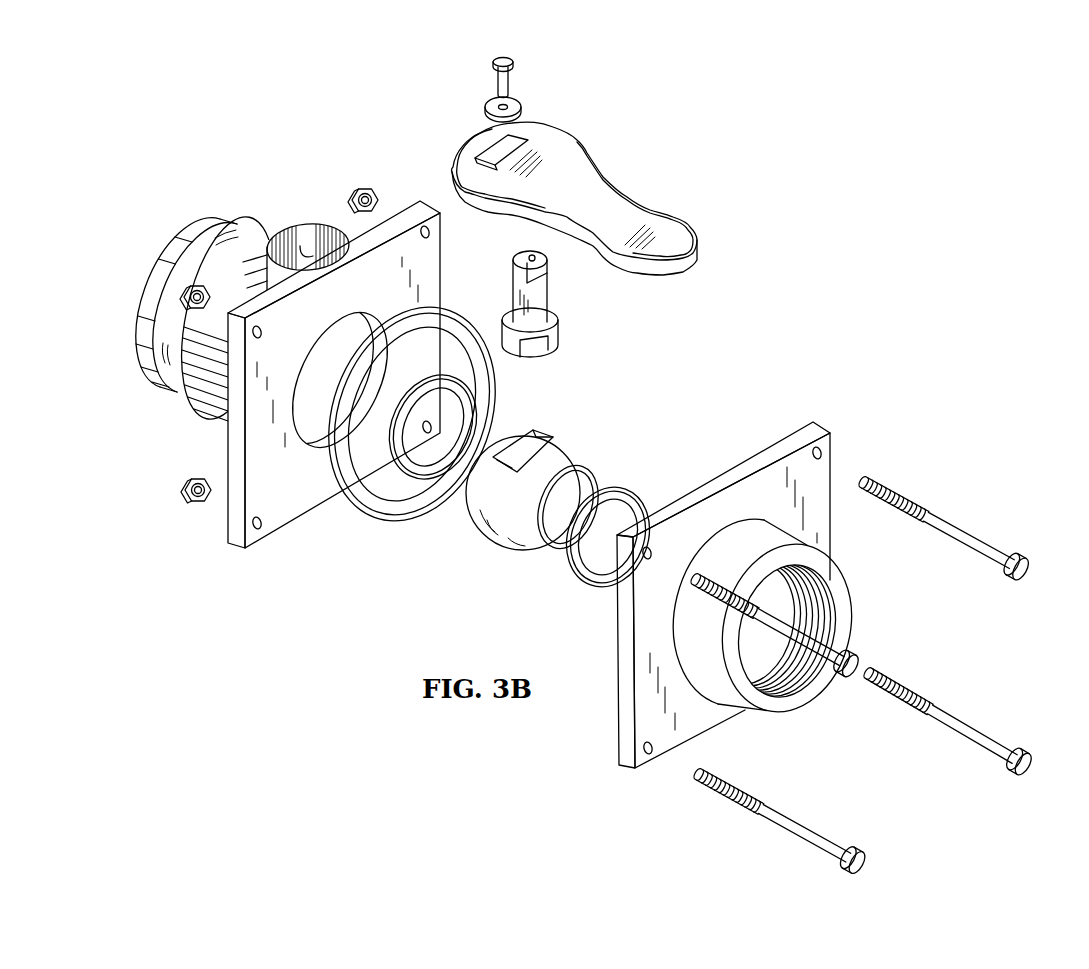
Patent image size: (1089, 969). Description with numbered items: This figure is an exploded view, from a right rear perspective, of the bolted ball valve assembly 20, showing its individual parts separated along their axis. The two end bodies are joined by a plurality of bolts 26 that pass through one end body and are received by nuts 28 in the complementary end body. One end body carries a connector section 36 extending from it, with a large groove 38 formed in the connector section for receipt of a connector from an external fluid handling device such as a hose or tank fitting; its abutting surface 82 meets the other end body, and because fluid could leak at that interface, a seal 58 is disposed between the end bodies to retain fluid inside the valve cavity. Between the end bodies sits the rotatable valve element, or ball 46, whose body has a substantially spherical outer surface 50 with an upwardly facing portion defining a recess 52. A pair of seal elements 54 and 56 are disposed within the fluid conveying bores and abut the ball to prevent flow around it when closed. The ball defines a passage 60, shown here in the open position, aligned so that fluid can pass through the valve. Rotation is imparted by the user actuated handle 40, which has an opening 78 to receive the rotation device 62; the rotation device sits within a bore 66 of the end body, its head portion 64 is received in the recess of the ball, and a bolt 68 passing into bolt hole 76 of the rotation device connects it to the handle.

The bolted ball valve assembly 20 is at (973, 157).
The bolts 26 is at (993, 547).
The nuts 28 is at (367, 185).
The connector section 36 is at (212, 214).
The large groove 38 is at (266, 244).
The user actuated handle 40 is at (670, 230).
The rotatable valve element (ball) 46 is at (510, 533).
The substantially spherical outer surface 50 is at (587, 470).
The recess 52 is at (537, 443).
The seal element 54 is at (633, 497).
The seal element 56 is at (472, 393).
The seal 58 is at (380, 527).
The passage 60 is at (550, 530).
The rotation device 62 is at (540, 300).
The head portion 64 is at (555, 338).
The bore 66 is at (315, 237).
The bolt 68 is at (512, 55).
The bolt hole 76 is at (528, 252).
The opening 78 is at (512, 148).
The surface 82 is at (273, 507).